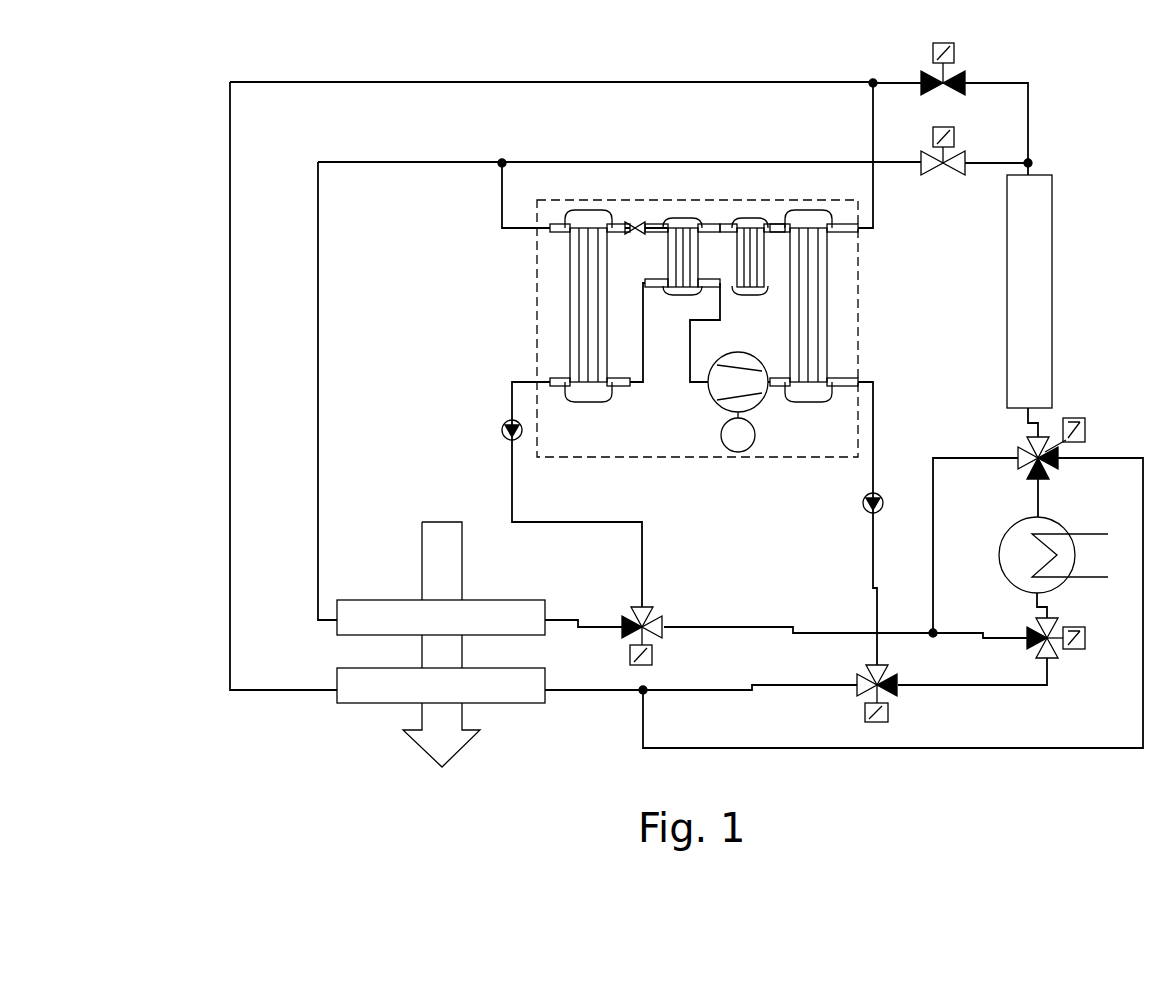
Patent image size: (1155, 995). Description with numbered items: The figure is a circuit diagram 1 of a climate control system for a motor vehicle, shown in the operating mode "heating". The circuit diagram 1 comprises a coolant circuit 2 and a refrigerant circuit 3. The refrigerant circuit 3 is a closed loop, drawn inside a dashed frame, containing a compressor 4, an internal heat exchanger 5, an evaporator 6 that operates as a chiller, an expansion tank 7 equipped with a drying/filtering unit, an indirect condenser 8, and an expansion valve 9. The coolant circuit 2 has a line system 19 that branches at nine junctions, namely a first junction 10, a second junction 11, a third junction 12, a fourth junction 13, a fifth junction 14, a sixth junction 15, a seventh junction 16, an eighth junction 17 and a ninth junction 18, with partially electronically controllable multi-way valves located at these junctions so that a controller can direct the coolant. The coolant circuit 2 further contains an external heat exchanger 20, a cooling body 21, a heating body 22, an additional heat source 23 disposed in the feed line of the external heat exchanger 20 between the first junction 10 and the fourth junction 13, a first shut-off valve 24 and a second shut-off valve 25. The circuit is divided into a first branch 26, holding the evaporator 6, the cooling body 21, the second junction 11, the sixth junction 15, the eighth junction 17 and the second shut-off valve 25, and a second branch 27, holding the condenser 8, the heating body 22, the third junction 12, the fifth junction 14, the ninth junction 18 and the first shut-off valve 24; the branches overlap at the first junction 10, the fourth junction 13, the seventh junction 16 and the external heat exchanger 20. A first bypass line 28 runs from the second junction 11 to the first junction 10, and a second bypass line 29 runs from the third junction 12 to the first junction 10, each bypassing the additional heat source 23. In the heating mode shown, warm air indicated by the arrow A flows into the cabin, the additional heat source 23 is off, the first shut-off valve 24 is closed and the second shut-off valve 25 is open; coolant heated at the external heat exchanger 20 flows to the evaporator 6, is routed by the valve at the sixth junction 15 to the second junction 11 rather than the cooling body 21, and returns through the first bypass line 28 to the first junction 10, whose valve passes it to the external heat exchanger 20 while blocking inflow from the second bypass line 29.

The circuit diagram 1 is at (152, 126).
The coolant circuit 2 is at (230, 258).
The refrigerant circuit 3 is at (537, 290).
The compressor 4 is at (722, 388).
The internal heat exchanger 5 is at (683, 224).
The evaporator 6 is at (585, 226).
The expansion tank 7 is at (750, 224).
The indirect condenser 8 is at (808, 224).
The expansion valve 9 is at (638, 224).
The first junction 10 is at (1028, 452).
The second junction 11 is at (935, 630).
The third junction 12 is at (641, 693).
The fourth junction 13 is at (1058, 648).
The fifth junction 14 is at (860, 690).
The sixth junction 15 is at (655, 622).
The seventh junction 16 is at (1032, 162).
The eighth junction 17 is at (500, 166).
The ninth junction 18 is at (871, 81).
The line system 19 is at (230, 342).
The external heat exchanger 20 is at (1033, 212).
The cooling body 21 is at (441, 617).
The heating body 22 is at (441, 685).
The additional heat source 23 is at (1053, 567).
The first shut-off valve 24 is at (950, 92).
The second shut-off valve 25 is at (943, 170).
The first branch 26 is at (318, 323).
The second branch 27 is at (230, 452).
The first bypass line 28 is at (933, 480).
The second bypass line 29 is at (1005, 748).
The arrow A is at (410, 740).